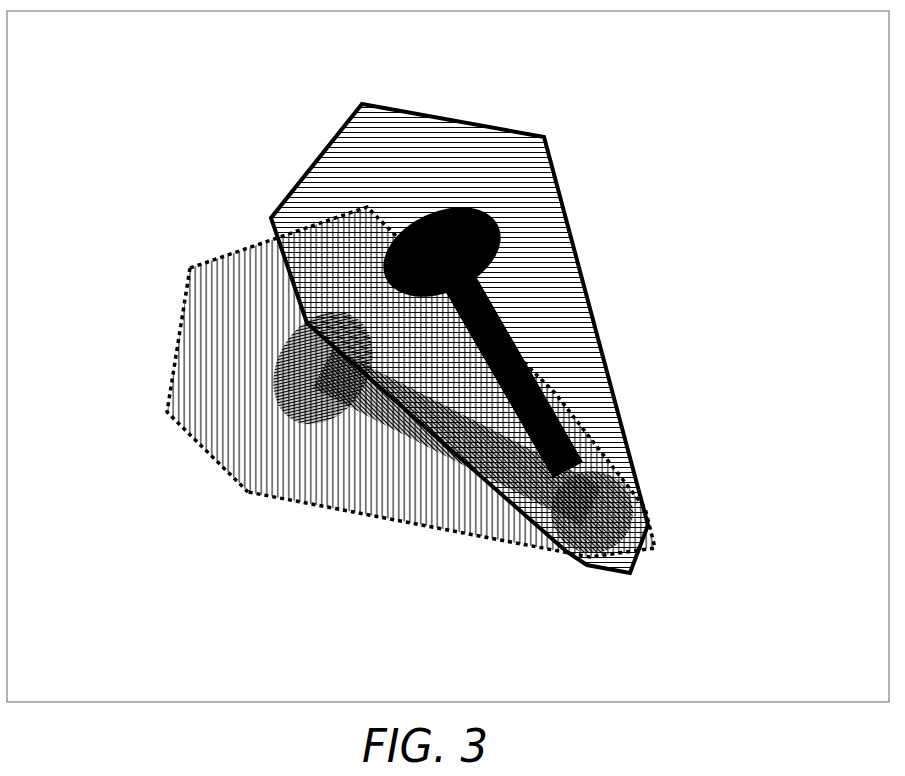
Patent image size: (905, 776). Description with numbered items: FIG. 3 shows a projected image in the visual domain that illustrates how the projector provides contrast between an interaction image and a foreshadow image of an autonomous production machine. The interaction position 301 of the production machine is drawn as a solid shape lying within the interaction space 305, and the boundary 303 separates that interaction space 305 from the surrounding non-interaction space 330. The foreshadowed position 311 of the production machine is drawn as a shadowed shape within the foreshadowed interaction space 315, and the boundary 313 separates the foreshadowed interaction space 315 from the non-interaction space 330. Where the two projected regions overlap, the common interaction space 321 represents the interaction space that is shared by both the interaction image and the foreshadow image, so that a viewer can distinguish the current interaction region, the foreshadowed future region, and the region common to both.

The interaction position of the production machine 301 is at (518, 246).
The boundary of the interaction space 303 is at (560, 161).
The interaction space 305 is at (458, 153).
The foreshadowed position of the production machine 311 is at (408, 447).
The boundary of the foreshadowed interaction space 313 is at (238, 480).
The foreshadowed interaction space 315 is at (233, 417).
The common interaction space 321 is at (313, 270).
The non-interaction space 330 is at (198, 132).